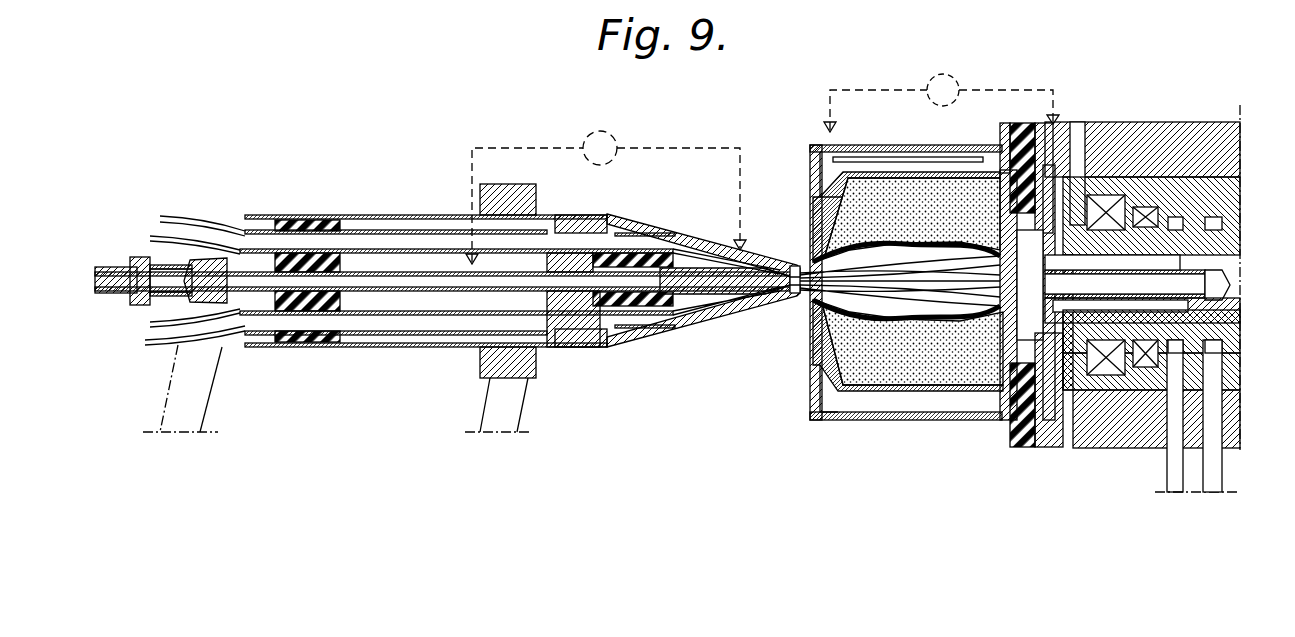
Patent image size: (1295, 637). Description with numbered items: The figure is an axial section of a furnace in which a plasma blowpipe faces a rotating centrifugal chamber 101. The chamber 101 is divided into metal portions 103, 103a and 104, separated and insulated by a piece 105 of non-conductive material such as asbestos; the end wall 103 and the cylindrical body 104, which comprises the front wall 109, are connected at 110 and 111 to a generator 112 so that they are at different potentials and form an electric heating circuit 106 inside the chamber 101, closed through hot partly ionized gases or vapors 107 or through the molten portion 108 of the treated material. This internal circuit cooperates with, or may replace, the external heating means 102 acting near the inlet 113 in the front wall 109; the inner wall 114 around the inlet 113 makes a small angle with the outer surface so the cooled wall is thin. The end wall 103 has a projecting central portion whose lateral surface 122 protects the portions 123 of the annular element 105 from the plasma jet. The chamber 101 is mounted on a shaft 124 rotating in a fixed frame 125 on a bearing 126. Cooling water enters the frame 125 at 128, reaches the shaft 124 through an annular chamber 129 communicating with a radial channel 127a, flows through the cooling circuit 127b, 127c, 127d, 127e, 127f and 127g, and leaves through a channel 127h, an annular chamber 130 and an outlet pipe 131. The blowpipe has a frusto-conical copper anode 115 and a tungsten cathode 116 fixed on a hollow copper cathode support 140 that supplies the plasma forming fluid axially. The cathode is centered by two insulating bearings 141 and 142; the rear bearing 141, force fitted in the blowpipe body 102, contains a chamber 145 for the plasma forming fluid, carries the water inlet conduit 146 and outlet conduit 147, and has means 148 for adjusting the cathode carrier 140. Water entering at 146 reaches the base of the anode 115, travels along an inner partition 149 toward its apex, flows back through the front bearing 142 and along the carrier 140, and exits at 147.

The chamber 101 is at (810, 146).
The heating means 102 is at (400, 214).
The end wall 103 is at (1000, 258).
The metal portion 103a is at (1025, 447).
The cylindrical body 104 is at (897, 145).
The annular part 105 is at (1010, 440).
The electric heating circuit 106 is at (912, 90).
The gases or vapors 107 is at (892, 290).
The molten portion 108 is at (890, 294).
The front wall 109 is at (810, 186).
The movable contact 110 is at (1056, 108).
The movable contact 111 is at (860, 123).
The generator 112 is at (945, 75).
The inlet 113 is at (812, 298).
The inner wall 114 is at (830, 348).
The anode 115 is at (755, 298).
The cathode 116 is at (703, 312).
The lateral surface 122 is at (1100, 114).
The portions of annular element 123 is at (1000, 170).
The rotating shaft 124 is at (1218, 250).
The fixed frame 125 is at (1212, 150).
The bearing 126 is at (1110, 195).
The radial channel 127a is at (1175, 217).
The cooling circuit 127b is at (1050, 260).
The cooling circuit 127c is at (950, 157).
The cooling circuit 127d is at (820, 153).
The cooling circuit 127e is at (868, 405).
The cooling circuit 127f is at (1000, 306).
The cooling circuit 127g is at (1052, 294).
The channel 127h is at (1198, 302).
The water inlet 128 is at (1175, 492).
The annular chamber 129 is at (1176, 348).
The annular chamber 130 is at (1195, 352).
The outlet pipe 131 is at (1215, 492).
The hollow cathode support 140 is at (445, 291).
The bearing 141 is at (340, 262).
The front bearing 142 is at (645, 252).
The chamber 145 is at (300, 220).
The inlet conduit 146 is at (224, 222).
The outlet conduit 147 is at (238, 348).
The adjusting means 148 is at (195, 268).
The inner partition 149 is at (718, 300).